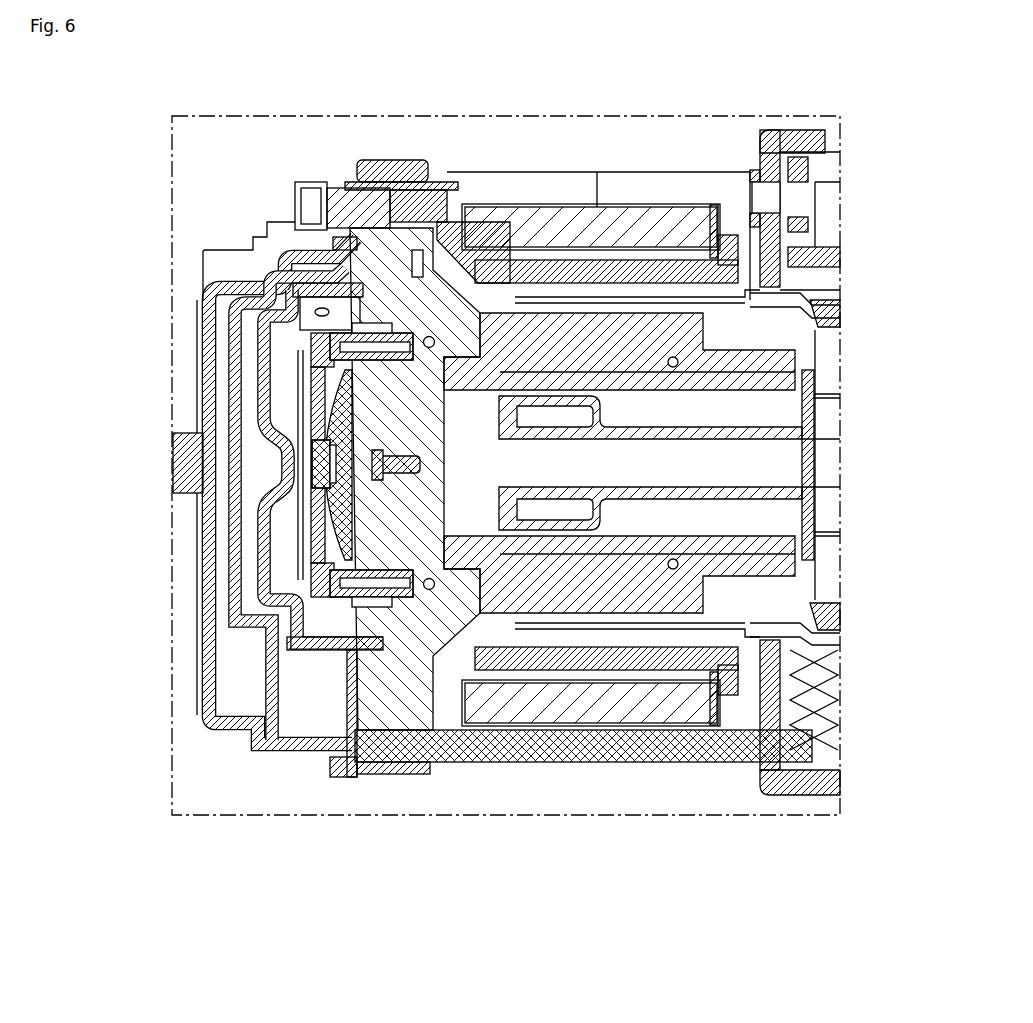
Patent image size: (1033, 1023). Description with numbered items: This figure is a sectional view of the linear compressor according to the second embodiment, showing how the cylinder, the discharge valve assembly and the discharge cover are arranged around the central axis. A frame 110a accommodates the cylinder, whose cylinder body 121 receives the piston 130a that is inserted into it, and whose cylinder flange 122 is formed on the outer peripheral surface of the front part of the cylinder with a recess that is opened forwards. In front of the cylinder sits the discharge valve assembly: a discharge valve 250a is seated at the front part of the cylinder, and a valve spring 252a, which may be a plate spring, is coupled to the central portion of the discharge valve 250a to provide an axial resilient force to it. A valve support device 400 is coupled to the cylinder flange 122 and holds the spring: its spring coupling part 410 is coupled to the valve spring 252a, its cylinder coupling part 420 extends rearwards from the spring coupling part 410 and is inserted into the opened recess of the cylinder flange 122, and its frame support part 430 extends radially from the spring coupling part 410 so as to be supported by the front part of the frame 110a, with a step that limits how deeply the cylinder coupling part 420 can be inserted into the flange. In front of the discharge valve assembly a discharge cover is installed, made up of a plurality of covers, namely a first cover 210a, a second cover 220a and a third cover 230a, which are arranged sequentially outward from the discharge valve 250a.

The frame 110a is at (395, 337).
The cylinder body 121 is at (556, 362).
The cylinder flange 122 is at (360, 322).
The piston 130a is at (653, 383).
The first cover 210a is at (215, 412).
The second cover 220a is at (237, 320).
The third cover 230a is at (200, 398).
The discharge valve 250a is at (322, 463).
The valve spring 252a is at (328, 538).
The valve support device 400 is at (325, 603).
The spring coupling part 410 is at (395, 342).
The cylinder coupling part 420 is at (440, 182).
The frame support part 430 is at (368, 330).